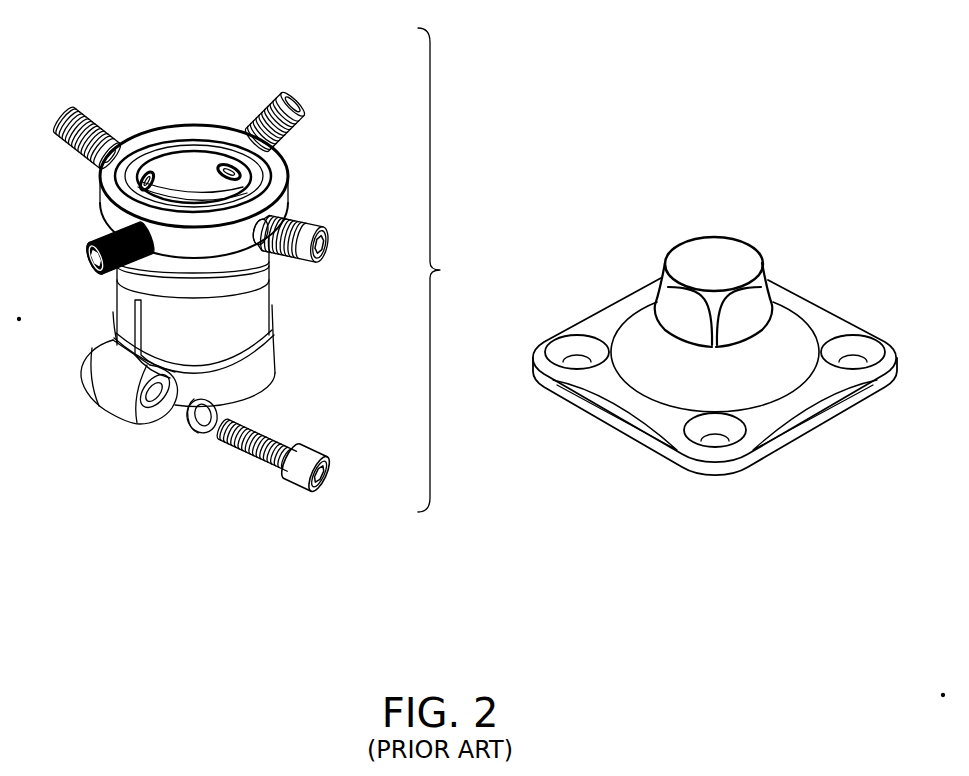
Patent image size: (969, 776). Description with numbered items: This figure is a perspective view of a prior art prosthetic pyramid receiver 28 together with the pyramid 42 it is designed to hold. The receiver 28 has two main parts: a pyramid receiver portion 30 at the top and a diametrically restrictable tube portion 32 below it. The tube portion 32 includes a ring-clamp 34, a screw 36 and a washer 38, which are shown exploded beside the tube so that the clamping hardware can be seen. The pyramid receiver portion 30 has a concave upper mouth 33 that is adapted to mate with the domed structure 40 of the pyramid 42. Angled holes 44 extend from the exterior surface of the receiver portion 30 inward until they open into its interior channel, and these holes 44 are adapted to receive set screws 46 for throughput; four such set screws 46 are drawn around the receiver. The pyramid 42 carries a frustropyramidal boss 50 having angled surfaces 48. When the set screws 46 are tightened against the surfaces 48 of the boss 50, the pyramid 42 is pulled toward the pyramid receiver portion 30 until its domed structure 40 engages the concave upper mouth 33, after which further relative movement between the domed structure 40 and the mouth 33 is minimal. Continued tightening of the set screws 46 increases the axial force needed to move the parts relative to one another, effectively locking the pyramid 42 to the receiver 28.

The bracket assembly 28 is at (452, 270).
The pyramid receiver portion 30 is at (217, 112).
The diametrically restrictable tube portion 32 is at (270, 292).
The concave upper mouth 33 is at (168, 147).
The ring-clamp 34 is at (277, 352).
The screw 36 is at (310, 452).
The washer 38 is at (193, 435).
The domed structure 40 is at (632, 374).
The pyramid 42 is at (588, 451).
The angled holes 44 is at (273, 212).
The set screws 46 is at (90, 114).
The surfaces 48 is at (747, 320).
The frustropyramidal boss 50 is at (731, 244).